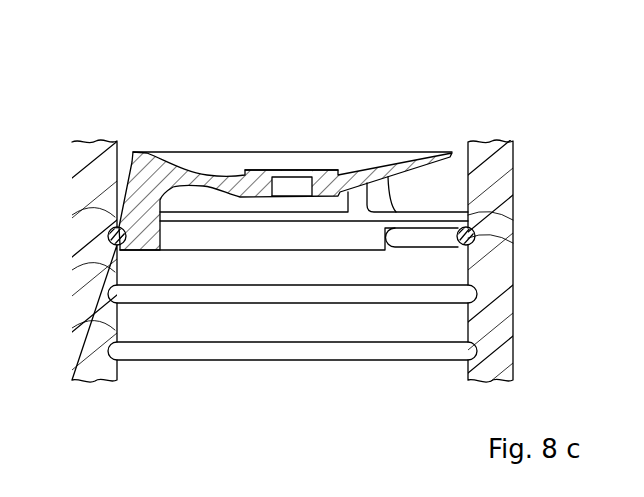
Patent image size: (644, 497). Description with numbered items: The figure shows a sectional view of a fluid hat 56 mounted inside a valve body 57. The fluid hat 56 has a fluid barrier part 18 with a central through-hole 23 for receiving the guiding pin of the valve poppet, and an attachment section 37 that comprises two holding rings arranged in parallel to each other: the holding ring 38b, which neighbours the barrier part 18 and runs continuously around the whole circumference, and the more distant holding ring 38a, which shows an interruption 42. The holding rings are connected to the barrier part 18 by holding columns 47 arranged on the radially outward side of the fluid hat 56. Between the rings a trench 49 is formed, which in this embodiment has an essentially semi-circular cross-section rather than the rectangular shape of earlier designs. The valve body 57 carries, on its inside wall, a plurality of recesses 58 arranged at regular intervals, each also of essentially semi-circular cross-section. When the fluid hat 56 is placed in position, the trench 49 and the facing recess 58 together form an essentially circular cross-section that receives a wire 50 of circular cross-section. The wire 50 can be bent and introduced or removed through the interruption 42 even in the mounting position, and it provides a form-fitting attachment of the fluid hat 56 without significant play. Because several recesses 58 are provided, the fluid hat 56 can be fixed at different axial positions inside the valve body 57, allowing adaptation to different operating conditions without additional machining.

The fluid barrier part 18 is at (171, 168).
The through-hole 23 is at (289, 170).
The attachment section 37 is at (457, 190).
The holding ring 38a is at (403, 252).
The holding ring 38b is at (470, 215).
The interruption 42 is at (437, 252).
The holding column 47 is at (163, 201).
The trench 49 is at (128, 244).
The wire 50 is at (478, 238).
The fluid hat 56 is at (413, 131).
The valve body 57 is at (513, 188).
The recess 58 is at (72, 214).